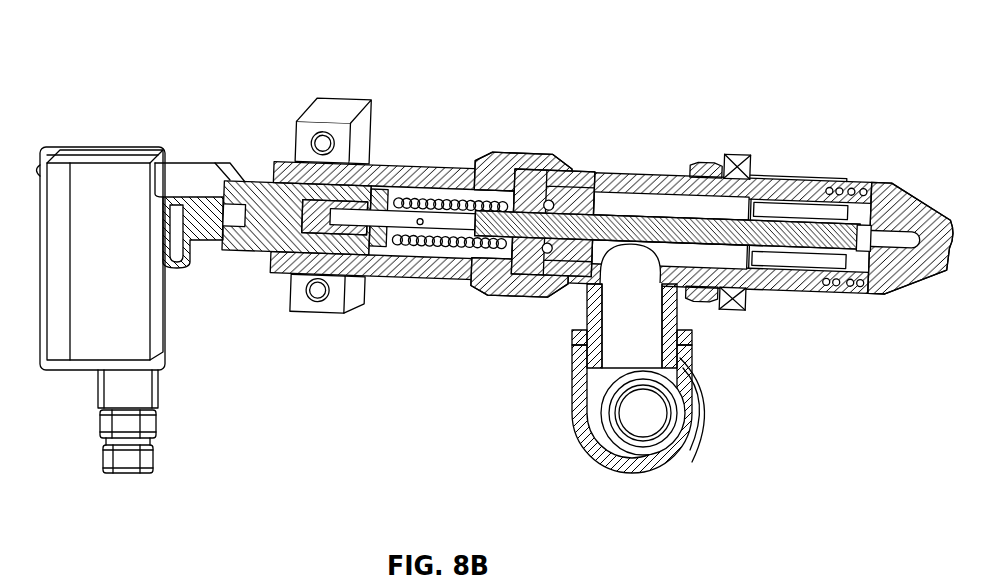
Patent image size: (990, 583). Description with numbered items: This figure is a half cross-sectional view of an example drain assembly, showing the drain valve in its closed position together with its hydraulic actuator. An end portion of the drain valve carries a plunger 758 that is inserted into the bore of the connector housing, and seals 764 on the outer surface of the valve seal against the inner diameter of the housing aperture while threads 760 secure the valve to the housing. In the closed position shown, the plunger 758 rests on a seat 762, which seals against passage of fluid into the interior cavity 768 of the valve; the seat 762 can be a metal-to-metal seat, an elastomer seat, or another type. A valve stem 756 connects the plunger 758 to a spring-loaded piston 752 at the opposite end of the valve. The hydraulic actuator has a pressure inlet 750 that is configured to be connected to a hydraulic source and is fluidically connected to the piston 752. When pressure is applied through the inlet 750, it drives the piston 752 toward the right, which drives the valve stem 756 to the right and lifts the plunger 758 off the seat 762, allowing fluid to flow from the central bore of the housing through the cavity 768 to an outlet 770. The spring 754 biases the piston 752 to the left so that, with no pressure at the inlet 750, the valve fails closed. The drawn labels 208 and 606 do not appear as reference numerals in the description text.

The solenoid housing 208 is at (496, 477).
The injector assembly 606 is at (570, 80).
The pressure inlet 750 is at (183, 269).
The spring-loaded piston 752 is at (330, 226).
The spring 754 is at (450, 254).
The valve stem 756 is at (578, 197).
The plunger 758 is at (910, 276).
The threads 760 is at (770, 176).
The seat 762 is at (847, 290).
The seals 764 is at (845, 185).
The interior cavity 768 is at (721, 295).
The outlet 770 is at (717, 380).